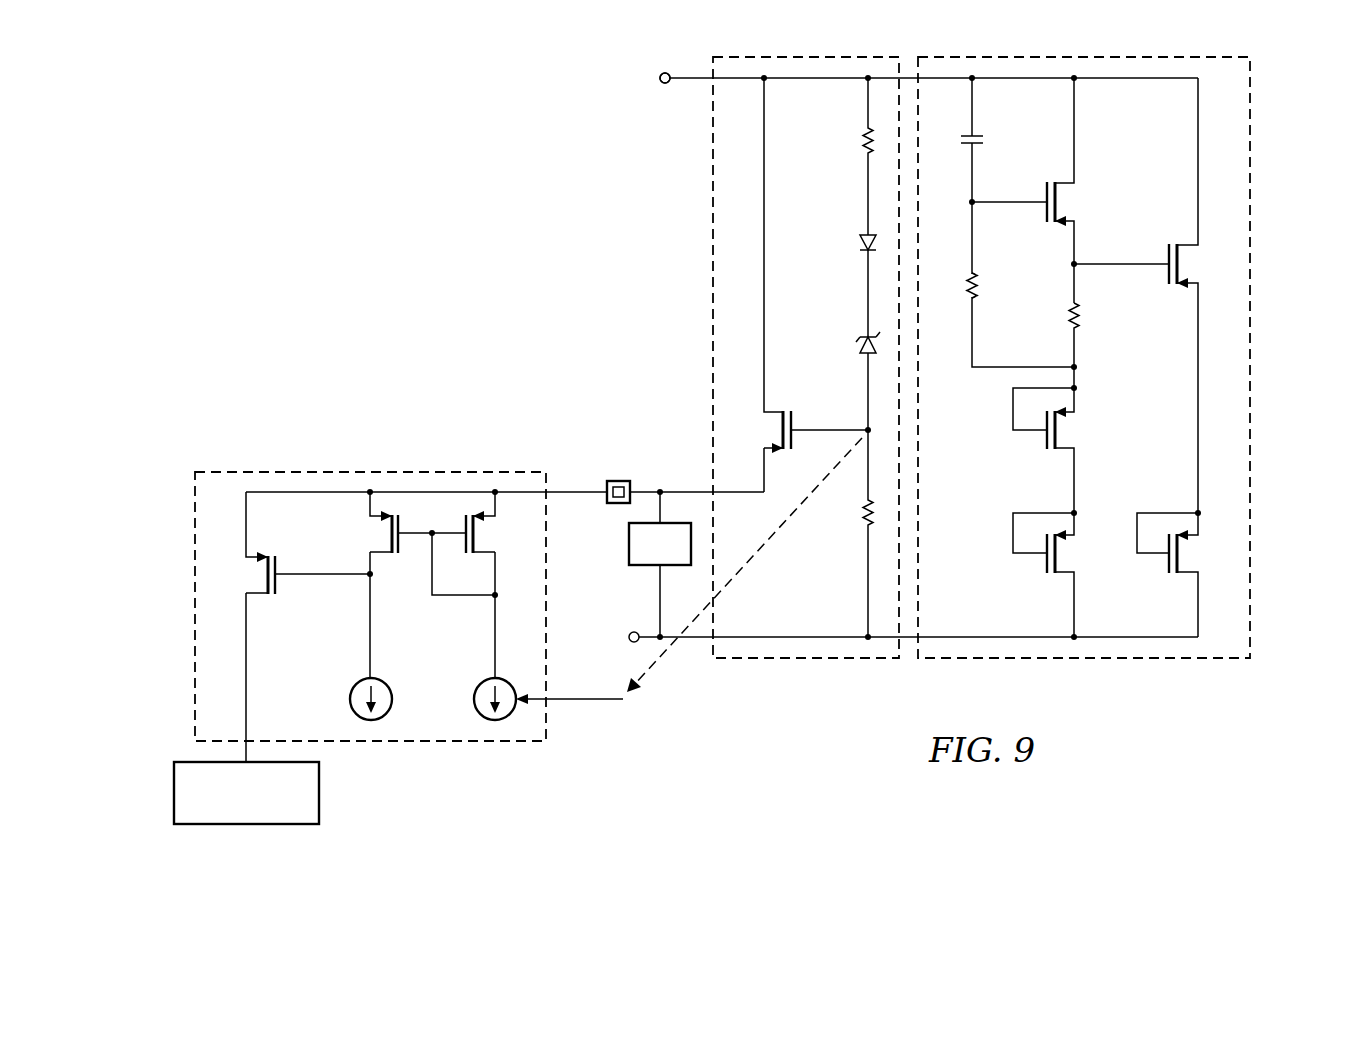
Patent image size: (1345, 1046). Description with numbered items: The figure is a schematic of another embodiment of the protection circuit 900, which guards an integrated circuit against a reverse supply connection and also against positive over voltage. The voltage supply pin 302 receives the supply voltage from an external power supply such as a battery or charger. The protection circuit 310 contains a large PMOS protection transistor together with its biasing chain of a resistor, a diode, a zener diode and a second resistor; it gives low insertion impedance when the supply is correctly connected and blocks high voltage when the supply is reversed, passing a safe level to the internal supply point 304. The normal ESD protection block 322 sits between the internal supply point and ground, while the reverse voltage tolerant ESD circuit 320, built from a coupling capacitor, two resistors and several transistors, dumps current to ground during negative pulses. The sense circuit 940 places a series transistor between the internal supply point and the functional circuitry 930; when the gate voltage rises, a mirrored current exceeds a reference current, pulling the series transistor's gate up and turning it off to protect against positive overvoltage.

The protection circuit 900 is at (355, 137).
The voltage supply pin 302 is at (665, 84).
The protection circuit 310 is at (708, 252).
The ESD circuit 320 is at (1258, 160).
The sense circuit 940 is at (328, 467).
The internal VDDINT point 304 is at (614, 482).
The ESD protection block 322 is at (629, 544).
The functional circuitry 930 is at (319, 791).